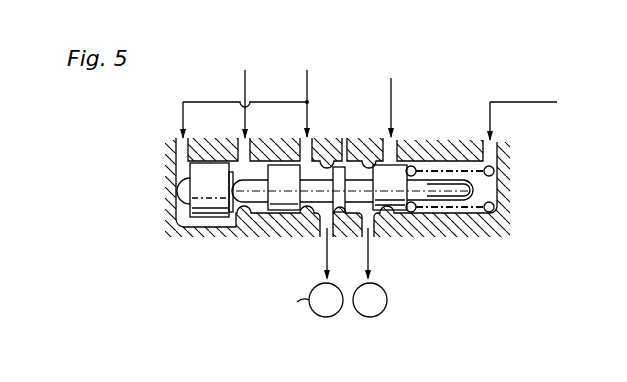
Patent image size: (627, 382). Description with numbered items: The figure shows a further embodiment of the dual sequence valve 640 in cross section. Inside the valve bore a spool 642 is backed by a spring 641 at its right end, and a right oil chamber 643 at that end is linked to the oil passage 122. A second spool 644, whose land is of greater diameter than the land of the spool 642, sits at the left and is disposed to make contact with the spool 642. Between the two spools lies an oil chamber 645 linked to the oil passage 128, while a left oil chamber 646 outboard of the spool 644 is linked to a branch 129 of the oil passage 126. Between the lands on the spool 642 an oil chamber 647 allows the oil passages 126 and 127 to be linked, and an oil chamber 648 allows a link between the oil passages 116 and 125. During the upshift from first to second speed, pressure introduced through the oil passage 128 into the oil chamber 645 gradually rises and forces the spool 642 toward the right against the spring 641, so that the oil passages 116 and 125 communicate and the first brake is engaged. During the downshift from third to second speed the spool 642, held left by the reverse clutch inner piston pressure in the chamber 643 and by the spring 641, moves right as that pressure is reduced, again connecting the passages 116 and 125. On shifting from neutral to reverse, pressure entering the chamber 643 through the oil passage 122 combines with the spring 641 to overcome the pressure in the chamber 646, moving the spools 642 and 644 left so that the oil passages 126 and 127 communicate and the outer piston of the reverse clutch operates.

The oil passage 116 is at (391, 92).
The oil passage 122 is at (491, 101).
The oil passage 125 is at (369, 263).
The oil passage 126 is at (308, 77).
The oil passage 127 is at (326, 263).
The oil passage 128 is at (246, 77).
The branch of the oil passage 129 is at (185, 101).
The dual sequence valve 640 is at (174, 230).
The spring 641 is at (495, 172).
The spool 642 is at (427, 197).
The right oil chamber 643 is at (485, 198).
The spool 644 is at (201, 213).
The oil chamber 645 is at (257, 173).
The left oil chamber 646 is at (184, 213).
The oil chamber 647 is at (316, 172).
The oil chamber 648 is at (353, 173).